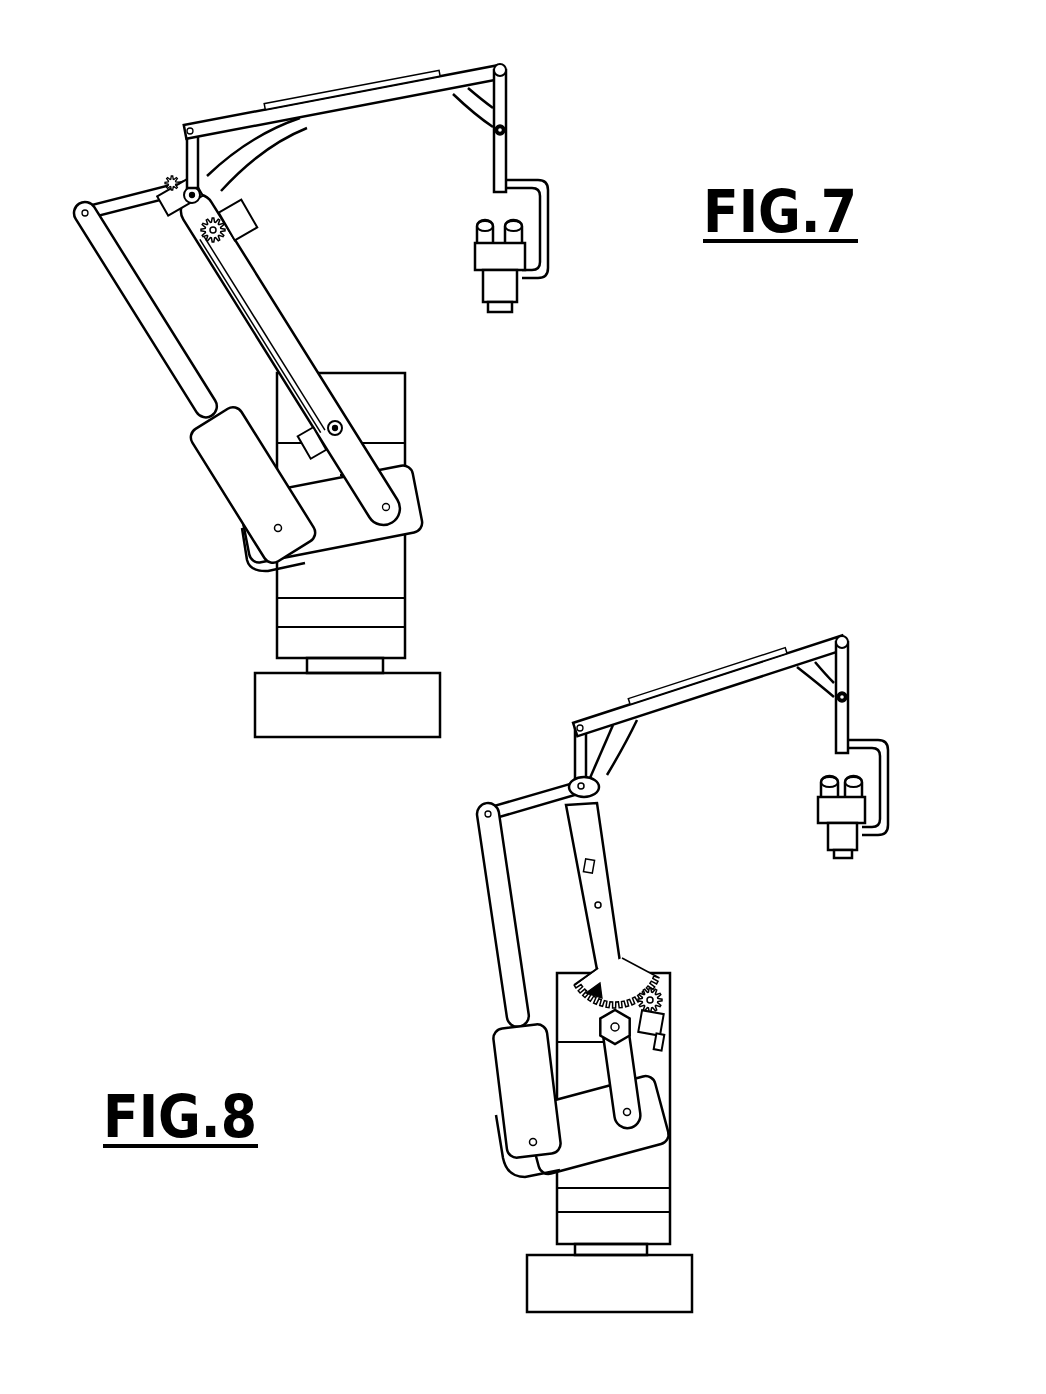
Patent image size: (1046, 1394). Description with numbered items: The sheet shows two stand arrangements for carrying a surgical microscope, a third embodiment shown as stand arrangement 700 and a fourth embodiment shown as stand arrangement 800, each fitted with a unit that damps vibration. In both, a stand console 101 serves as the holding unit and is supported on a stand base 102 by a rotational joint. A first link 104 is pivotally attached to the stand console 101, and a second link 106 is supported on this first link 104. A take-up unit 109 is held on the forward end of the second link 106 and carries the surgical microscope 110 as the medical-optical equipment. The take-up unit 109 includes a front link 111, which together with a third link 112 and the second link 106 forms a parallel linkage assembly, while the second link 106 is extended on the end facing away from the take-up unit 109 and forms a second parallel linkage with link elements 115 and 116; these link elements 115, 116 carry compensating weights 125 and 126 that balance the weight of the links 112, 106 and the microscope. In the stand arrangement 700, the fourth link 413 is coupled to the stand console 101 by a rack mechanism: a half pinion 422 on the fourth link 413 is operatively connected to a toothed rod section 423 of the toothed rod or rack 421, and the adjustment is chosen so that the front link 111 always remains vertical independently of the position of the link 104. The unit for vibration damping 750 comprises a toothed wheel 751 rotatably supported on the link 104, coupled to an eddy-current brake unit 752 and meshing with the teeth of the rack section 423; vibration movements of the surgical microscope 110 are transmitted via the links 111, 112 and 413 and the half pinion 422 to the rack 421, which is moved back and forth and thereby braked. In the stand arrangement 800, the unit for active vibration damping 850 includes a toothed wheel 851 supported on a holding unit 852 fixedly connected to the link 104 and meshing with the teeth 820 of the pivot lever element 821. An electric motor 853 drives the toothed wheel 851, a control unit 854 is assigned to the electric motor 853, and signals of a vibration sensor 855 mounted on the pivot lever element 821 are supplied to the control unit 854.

In FIG. 7, the stand console 101 is at (385, 583).
In FIG. 8, the stand console 101 is at (657, 1230).
In FIG. 7, the stand base 102 is at (290, 725).
In FIG. 8, the stand base 102 is at (668, 1292).
In FIG. 7, the first link 104 is at (283, 350).
In FIG. 8, the first link 104 is at (620, 1085).
In FIG. 7, the second link 106 is at (245, 145).
In FIG. 7, the take-up unit 109 is at (502, 163).
In FIG. 7, the surgical microscope 110 is at (505, 292).
In FIG. 7, the front link 111 is at (502, 88).
In FIG. 7, the third link 112 is at (487, 82).
In FIG. 7, the link element 115 is at (105, 243).
In FIG. 7, the link element 116 is at (327, 538).
In FIG. 8, the link element 116 is at (527, 1182).
In FIG. 7, the compensating weight 125 is at (215, 465).
In FIG. 8, the compensating weight 125 is at (510, 1085).
In FIG. 7, the compensating weight 126 is at (398, 515).
In FIG. 8, the compensating weight 126 is at (640, 1130).
In FIG. 7, the fourth link 413 is at (187, 142).
In FIG. 7, the toothed rod or rack 421 is at (233, 307).
In FIG. 7, the half pinion 422 is at (185, 178).
In FIG. 7, the toothed rod section 423 is at (167, 233).
In FIG. 7, the stand arrangement 700 is at (478, 355).
In FIG. 7, the unit for vibration damping 750 is at (324, 230).
In FIG. 7, the toothed wheel 751 is at (227, 240).
In FIG. 7, the eddy-current brake unit 752 is at (237, 203).
In FIG. 8, the stand arrangement 800 is at (440, 992).
In FIG. 8, the teeth 820 is at (608, 988).
In FIG. 8, the pivot lever element 821 is at (600, 817).
In FIG. 8, the unit for active vibration damping 850 is at (724, 1005).
In FIG. 8, the toothed wheel 851 is at (673, 997).
In FIG. 8, the holding unit 852 is at (670, 1045).
In FIG. 8, the electric motor 853 is at (673, 1015).
In FIG. 8, the control unit 854 is at (597, 1008).
In FIG. 8, the vibration sensor 855 is at (600, 877).